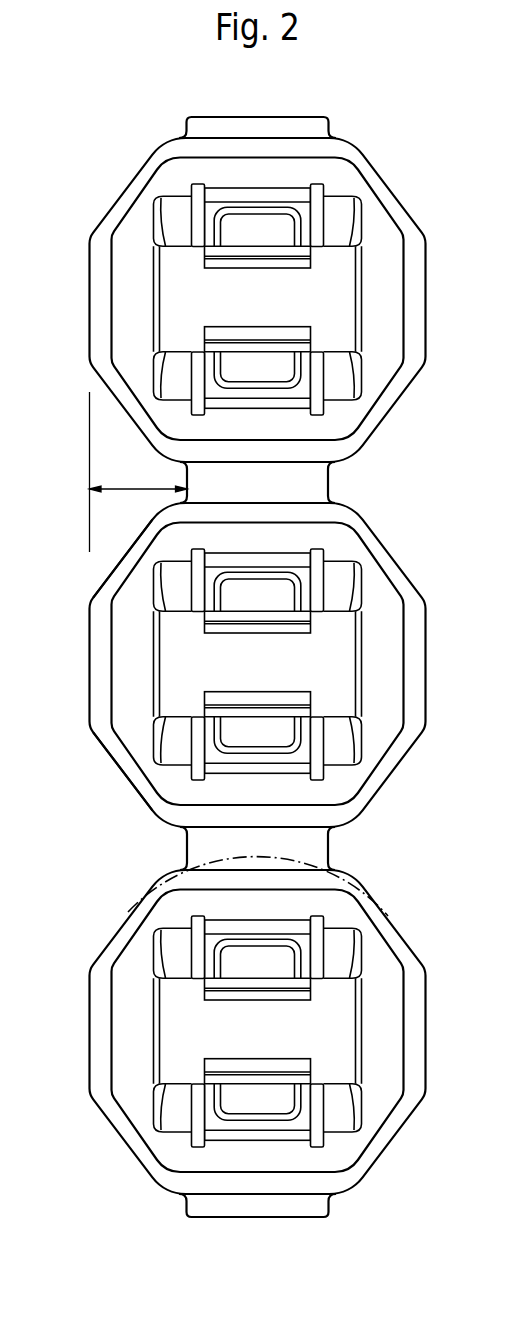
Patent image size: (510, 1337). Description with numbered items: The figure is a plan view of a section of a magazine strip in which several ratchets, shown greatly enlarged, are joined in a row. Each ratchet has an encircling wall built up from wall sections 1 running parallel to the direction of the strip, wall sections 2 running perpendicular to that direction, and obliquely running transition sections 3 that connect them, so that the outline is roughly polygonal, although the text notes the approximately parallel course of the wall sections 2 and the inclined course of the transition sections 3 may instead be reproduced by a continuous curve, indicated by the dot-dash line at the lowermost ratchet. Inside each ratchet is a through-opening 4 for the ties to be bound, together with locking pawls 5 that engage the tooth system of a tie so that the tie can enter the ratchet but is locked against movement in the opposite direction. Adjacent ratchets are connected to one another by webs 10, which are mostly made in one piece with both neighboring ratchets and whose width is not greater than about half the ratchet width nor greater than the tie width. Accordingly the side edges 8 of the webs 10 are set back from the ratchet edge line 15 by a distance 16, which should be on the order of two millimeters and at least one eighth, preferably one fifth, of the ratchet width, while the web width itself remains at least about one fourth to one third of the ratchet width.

The wall sections parallel to the magazine strip direction 1 is at (100, 648).
The wall sections perpendicular to the magazine strip direction 2 is at (203, 816).
The transition sections 3 is at (130, 555).
The through-opening 4 is at (213, 305).
The locking pawls 5 is at (248, 362).
The side edges of the webs 8 is at (328, 479).
The webs 10 is at (215, 849).
The ratchet edge line 15 is at (89, 457).
The distance 16 is at (139, 475).